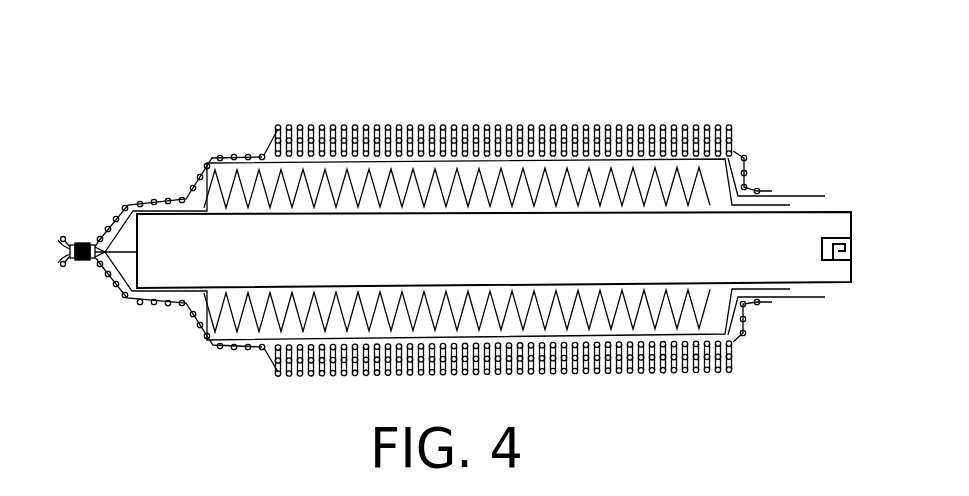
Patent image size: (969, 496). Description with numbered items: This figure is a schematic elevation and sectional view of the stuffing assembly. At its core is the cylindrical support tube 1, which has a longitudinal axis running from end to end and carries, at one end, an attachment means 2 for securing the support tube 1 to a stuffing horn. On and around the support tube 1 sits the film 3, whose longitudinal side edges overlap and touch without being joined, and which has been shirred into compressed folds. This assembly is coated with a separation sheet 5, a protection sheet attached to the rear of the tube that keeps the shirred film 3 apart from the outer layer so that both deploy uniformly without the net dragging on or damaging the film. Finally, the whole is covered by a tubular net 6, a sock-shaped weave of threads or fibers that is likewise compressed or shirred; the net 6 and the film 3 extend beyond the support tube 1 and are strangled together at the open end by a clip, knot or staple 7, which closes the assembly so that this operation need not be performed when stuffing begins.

The support tube 1 is at (658, 250).
The attachment means 2 is at (840, 238).
The film 3 is at (492, 177).
The separation sheet 5 is at (258, 157).
The tubular net 6 is at (357, 126).
The clip, knot or staple 7 is at (82, 242).